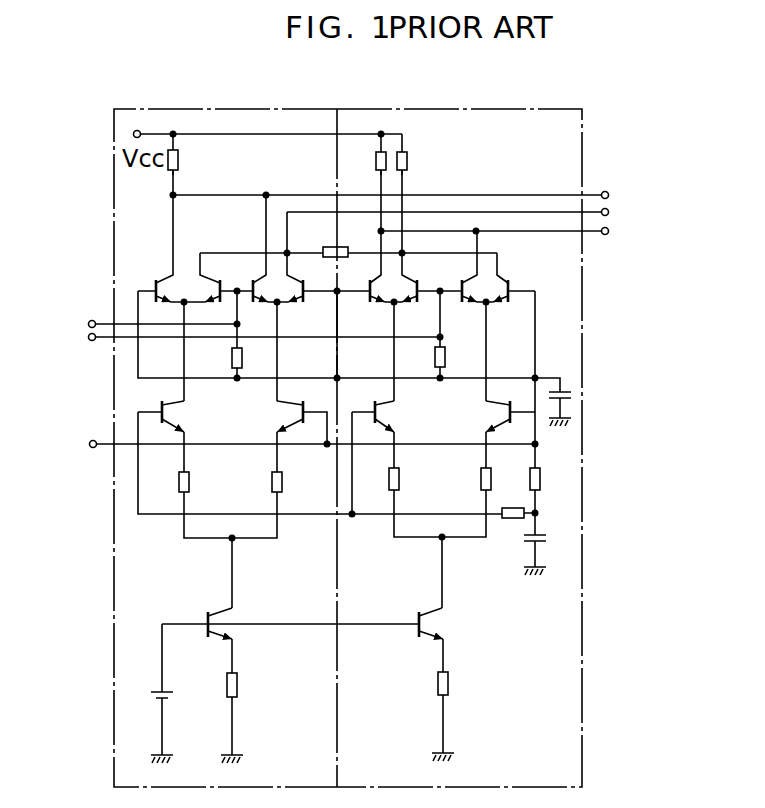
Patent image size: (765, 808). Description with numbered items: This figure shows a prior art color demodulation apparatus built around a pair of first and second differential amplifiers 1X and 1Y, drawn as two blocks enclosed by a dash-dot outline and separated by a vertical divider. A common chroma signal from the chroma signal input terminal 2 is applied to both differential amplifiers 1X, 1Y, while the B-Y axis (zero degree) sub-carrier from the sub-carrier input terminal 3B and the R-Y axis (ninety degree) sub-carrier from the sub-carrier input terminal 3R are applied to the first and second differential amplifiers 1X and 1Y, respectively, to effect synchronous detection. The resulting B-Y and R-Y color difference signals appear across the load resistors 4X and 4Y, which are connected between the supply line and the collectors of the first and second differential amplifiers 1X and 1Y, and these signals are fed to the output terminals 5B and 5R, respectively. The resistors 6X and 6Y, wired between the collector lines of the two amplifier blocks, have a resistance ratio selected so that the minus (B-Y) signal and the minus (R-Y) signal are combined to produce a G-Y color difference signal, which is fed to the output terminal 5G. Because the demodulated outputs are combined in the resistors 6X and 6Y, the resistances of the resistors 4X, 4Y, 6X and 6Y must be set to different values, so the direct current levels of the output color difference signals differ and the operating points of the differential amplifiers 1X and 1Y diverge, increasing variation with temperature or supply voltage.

The first differential amplifier 1X is at (213, 109).
The second differential amplifier 1Y is at (483, 109).
The chroma signal input terminal 2 is at (88, 443).
The sub-carrier input terminal 3B is at (89, 321).
The sub-carrier input terminal 3R is at (89, 339).
The load resistor 4X is at (178, 160).
The load resistor 4Y is at (376, 160).
The output terminal 5B is at (609, 193).
The output terminal 5G is at (609, 212).
The output terminal 5R is at (609, 231).
The resistor 6X is at (330, 246).
The resistor 6Y is at (407, 160).